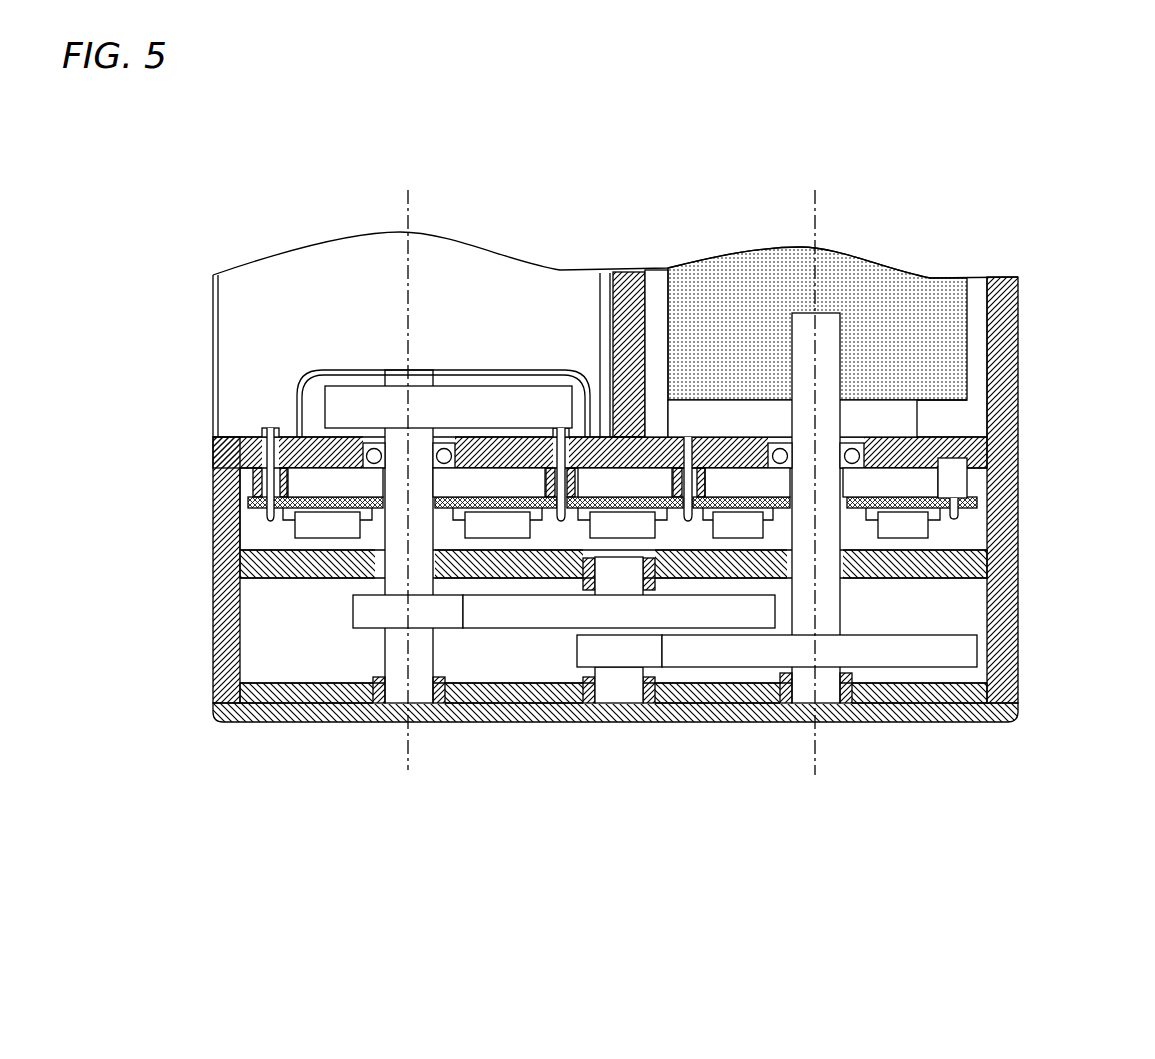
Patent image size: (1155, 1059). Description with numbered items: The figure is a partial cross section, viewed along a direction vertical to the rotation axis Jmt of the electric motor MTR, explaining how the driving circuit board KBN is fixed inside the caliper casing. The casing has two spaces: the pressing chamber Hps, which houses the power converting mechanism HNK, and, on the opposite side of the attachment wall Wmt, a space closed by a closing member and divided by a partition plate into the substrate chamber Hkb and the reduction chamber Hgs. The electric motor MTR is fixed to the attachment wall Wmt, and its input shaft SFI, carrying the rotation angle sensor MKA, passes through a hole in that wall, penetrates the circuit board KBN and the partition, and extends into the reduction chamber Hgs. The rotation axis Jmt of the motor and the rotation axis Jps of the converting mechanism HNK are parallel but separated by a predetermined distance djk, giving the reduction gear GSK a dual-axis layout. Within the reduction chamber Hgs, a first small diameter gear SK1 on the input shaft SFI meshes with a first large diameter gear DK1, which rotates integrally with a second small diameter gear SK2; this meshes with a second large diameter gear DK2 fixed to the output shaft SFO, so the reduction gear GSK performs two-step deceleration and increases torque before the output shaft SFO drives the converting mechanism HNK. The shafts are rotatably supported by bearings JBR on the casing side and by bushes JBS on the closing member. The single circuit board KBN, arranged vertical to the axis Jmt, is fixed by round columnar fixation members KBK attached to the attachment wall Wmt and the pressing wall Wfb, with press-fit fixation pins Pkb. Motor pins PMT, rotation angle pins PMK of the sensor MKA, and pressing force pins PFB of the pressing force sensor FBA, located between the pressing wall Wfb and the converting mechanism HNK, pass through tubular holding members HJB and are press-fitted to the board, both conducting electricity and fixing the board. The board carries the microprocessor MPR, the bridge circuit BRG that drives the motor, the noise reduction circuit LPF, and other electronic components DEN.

The predetermined distance djk is at (815, 202).
The pressing chamber Hps is at (655, 294).
The electric motor MTR is at (213, 357).
The power converting mechanism HNK is at (950, 370).
The attachment wall Wmt is at (229, 435).
The rotation angle sensor MKA is at (448, 407).
The pressing force sensor FBA is at (817, 418).
The pressing wall Wfb is at (922, 435).
The holding member HJB is at (213, 474).
The circuit board KBN is at (300, 493).
The bearing JBR is at (437, 470).
The rotation angle pins PMK is at (599, 485).
The pressing force pins PFB is at (647, 485).
The fixation member KBK is at (967, 483).
The motor pins PMT is at (265, 519).
The noise reduction circuit LPF is at (327, 523).
The microprocessor MPR is at (497, 523).
The other electronic components DEN is at (675, 523).
The bridge circuit BRG is at (903, 523).
The fixation pin Pkb is at (958, 517).
The substrate chamber Hkb is at (257, 528).
The bush JBS is at (655, 572).
The first small diameter gear SK1 is at (408, 611).
The first large diameter gear DK1 is at (619, 611).
The output shaft SFO is at (843, 609).
The input shaft SFI is at (385, 661).
The second small diameter gear SK2 is at (619, 651).
The second large diameter gear DK2 is at (819, 651).
The reduction chamber Hgs is at (282, 656).
The rotation axis of the electric motor Jmt is at (407, 748).
The reduction gear GSK is at (514, 657).
The rotation axis of the power converting mechanism Jps is at (818, 748).